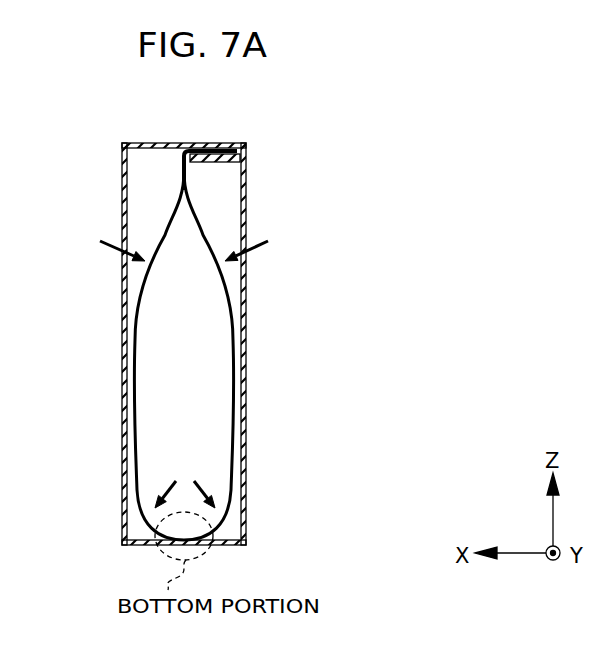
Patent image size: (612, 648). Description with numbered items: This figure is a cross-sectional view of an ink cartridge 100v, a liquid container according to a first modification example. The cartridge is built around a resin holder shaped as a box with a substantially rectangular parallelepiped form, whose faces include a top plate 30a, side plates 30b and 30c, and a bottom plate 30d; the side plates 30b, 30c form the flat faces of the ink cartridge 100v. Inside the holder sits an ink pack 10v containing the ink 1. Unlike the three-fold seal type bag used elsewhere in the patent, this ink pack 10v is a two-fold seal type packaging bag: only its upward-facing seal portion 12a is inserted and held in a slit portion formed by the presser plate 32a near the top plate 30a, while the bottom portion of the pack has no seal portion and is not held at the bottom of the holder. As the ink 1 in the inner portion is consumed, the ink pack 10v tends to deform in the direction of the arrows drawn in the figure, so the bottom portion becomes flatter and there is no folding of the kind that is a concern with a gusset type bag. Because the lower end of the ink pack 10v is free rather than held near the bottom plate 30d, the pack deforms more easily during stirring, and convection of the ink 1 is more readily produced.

The ink cartridge 100v is at (267, 342).
The ink 1 is at (198, 405).
The ink pack 10v is at (228, 293).
The seal portion 12a is at (208, 148).
The top plate 30a is at (170, 143).
The side plate 30b is at (246, 478).
The side plate 30c is at (122, 322).
The bottom plate 30d is at (143, 545).
The presser plate 32a is at (215, 158).